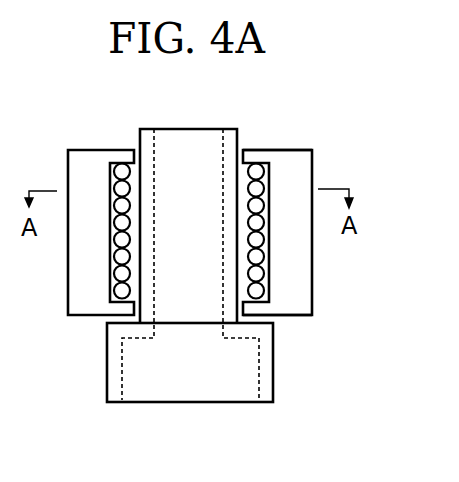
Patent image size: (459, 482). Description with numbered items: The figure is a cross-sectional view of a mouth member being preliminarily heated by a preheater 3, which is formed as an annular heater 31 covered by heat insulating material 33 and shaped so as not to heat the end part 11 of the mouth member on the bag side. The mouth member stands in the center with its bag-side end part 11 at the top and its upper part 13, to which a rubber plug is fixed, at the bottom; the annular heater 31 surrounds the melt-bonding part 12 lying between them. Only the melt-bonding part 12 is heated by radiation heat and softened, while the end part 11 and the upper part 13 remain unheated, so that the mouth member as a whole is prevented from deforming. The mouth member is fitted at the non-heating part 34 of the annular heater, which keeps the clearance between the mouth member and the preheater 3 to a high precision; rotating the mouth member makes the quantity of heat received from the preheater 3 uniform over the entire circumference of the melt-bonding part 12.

The preheater 3 is at (360, 163).
The end part of the mouth member 11 is at (237, 140).
The melt-bonding part of the mouth member 12 is at (140, 264).
The upper part of the mouth member 13 is at (275, 375).
The annular heater 31 is at (121, 166).
The heat insulating material 33 is at (298, 276).
The non-heating part of the annular heater 34 is at (268, 150).